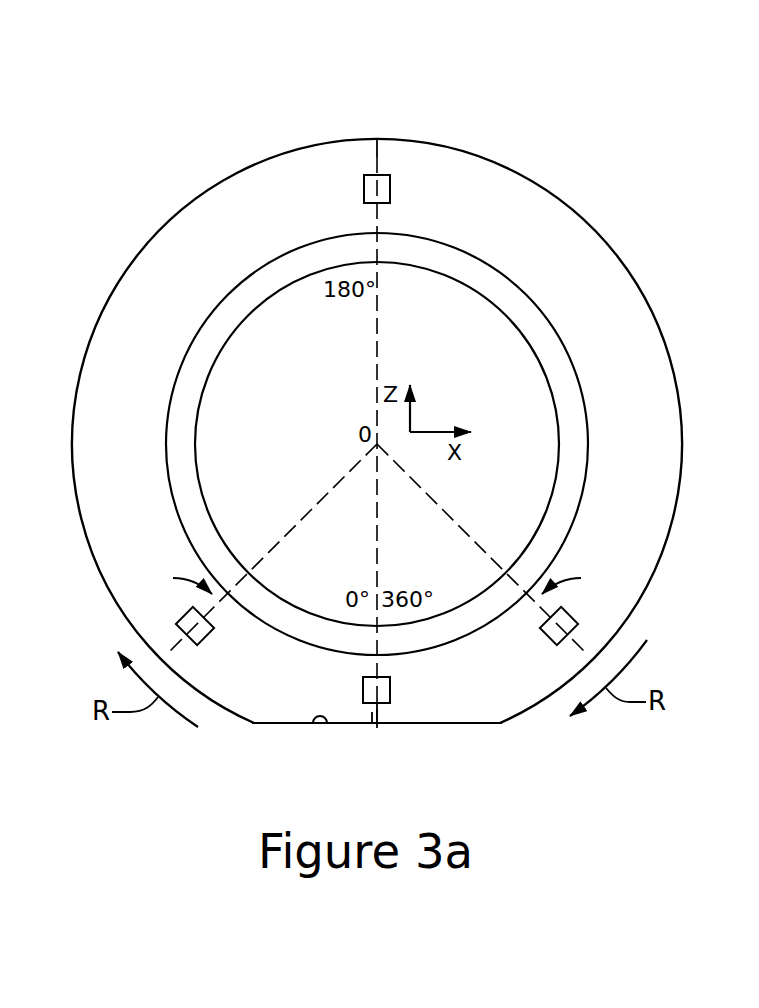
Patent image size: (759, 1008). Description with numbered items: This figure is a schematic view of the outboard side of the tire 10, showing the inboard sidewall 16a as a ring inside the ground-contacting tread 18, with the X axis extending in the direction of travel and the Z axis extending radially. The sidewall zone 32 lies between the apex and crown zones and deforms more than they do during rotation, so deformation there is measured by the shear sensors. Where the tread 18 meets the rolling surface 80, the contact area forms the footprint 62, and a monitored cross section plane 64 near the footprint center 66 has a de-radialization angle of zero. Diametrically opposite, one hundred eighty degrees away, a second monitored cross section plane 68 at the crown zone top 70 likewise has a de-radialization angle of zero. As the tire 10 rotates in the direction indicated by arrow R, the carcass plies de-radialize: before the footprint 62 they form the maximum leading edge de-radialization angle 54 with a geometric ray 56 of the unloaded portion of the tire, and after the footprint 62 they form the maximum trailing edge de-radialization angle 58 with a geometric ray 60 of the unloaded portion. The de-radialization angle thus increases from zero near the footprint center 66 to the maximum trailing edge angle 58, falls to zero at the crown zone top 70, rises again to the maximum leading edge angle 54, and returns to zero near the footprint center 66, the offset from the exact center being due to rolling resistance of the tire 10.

The tire 10 is at (572, 154).
The inboard sidewall 16a is at (570, 226).
The tread 18 is at (277, 153).
The sidewall zone 32 is at (363, 682).
The maximum leading edge de-radialization angle 54 is at (571, 578).
The geometric ray 56 is at (519, 613).
The maximum trailing edge de-radialization angle 58 is at (183, 578).
The geometric ray 60 is at (235, 613).
The footprint 62 is at (314, 720).
The monitored cross section plane 64 is at (372, 712).
The center of the footprint 66 is at (377, 728).
The monitored cross section plane 68 is at (382, 155).
The top of the crown zone 70 is at (377, 157).
The rolling surface 80 is at (489, 725).